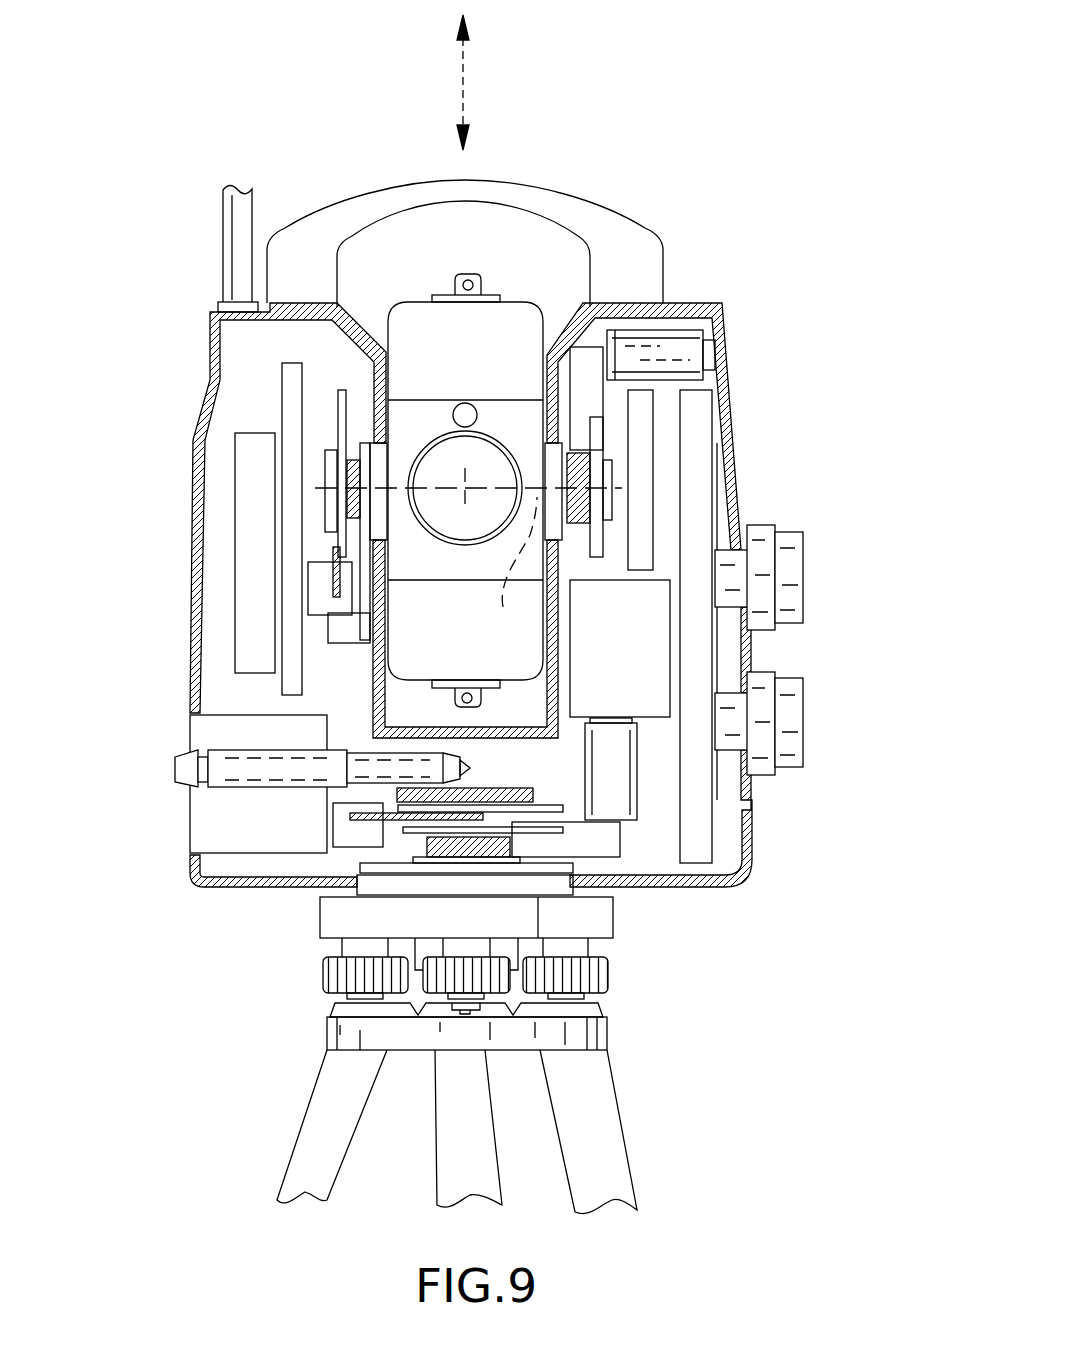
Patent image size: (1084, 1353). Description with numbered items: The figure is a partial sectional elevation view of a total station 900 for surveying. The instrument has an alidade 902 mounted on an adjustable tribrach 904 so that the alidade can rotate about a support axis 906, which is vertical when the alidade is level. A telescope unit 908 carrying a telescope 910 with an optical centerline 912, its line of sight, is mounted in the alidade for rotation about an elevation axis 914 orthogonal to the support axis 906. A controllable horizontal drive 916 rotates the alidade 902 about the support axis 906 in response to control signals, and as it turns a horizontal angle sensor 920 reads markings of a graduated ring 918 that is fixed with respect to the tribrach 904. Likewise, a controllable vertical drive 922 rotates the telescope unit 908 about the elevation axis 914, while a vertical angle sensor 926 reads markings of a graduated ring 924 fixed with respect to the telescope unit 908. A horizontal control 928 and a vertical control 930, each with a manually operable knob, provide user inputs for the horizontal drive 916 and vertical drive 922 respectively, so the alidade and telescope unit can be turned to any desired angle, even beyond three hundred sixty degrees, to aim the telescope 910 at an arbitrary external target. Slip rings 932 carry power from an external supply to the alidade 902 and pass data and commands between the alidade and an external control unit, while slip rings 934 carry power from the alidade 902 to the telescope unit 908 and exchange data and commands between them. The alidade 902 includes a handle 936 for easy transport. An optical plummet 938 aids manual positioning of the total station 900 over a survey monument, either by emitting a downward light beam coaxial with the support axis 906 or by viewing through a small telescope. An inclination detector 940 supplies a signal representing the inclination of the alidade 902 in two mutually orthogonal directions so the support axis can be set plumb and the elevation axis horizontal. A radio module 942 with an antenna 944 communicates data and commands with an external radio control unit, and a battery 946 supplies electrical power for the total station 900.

The total station 900 is at (178, 120).
The alidade 902 is at (755, 840).
The adjustable tribrach 904 is at (593, 928).
The support axis 906 is at (463, 83).
The telescope unit 908 is at (505, 340).
The telescope 910 is at (450, 547).
The optical centerline 912 is at (462, 492).
The elevation axis 914 is at (508, 570).
The horizontal drive 916 is at (626, 783).
The graduated ring 918 is at (397, 818).
The horizontal angle sensor 920 is at (335, 828).
The vertical drive 922 is at (687, 367).
The graduated ring 924 is at (345, 398).
The vertical angle sensor 926 is at (320, 598).
The horizontal control 928 is at (795, 735).
The vertical control 930 is at (795, 595).
The slip rings 932 is at (567, 867).
The slip rings 934 is at (330, 512).
The handle 936 is at (638, 270).
The optical plummet 938 is at (180, 760).
The inclination detector 940 is at (650, 647).
The radio module 942 is at (243, 470).
The antenna 944 is at (232, 258).
The battery 946 is at (208, 816).